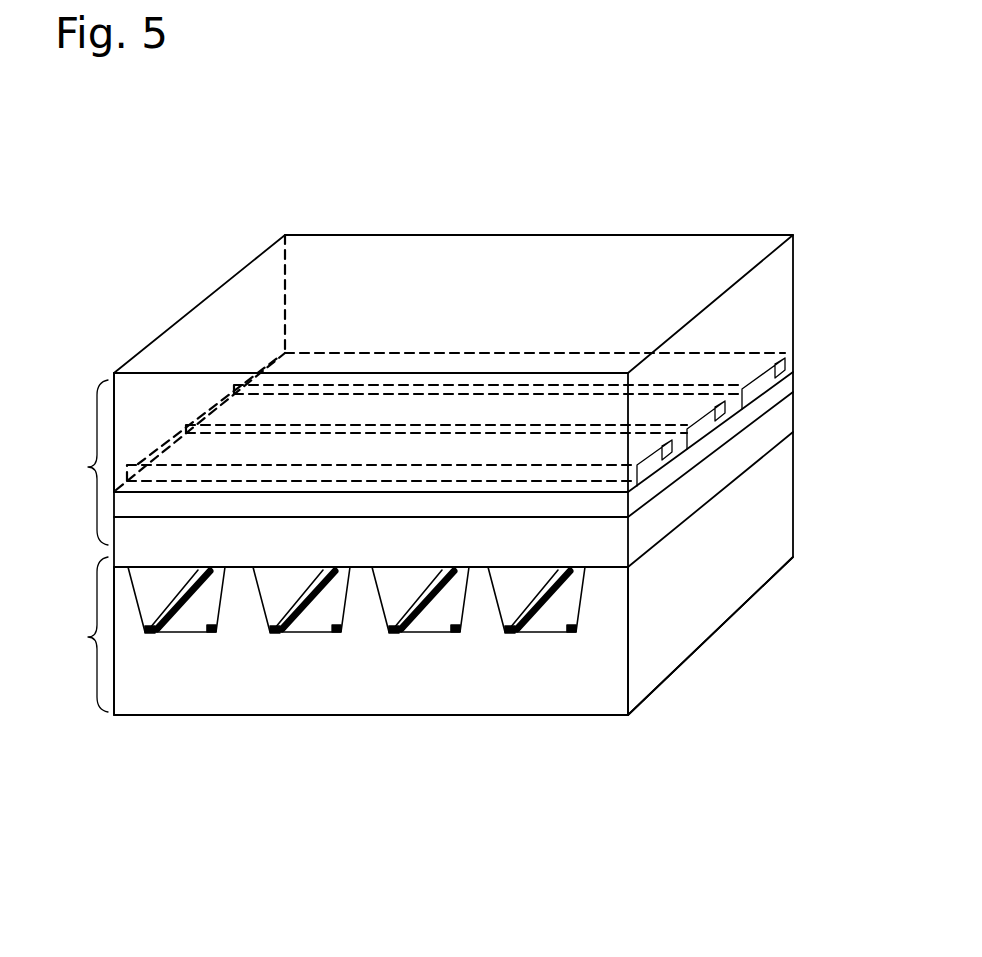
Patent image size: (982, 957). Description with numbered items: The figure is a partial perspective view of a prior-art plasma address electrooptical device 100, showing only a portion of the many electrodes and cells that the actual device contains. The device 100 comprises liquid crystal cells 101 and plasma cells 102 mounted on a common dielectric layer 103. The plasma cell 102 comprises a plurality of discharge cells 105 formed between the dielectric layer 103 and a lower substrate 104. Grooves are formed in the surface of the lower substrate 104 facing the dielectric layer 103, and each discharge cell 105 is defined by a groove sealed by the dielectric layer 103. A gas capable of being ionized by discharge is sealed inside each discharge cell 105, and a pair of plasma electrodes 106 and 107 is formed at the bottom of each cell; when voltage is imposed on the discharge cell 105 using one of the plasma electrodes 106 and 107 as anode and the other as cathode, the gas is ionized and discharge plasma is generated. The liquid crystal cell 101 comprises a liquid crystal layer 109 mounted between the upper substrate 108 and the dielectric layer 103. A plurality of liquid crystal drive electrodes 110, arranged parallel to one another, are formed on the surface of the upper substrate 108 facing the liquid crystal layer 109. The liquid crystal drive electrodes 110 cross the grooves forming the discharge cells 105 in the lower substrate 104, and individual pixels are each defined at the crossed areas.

The plasma address electrooptical device 100 is at (678, 186).
The liquid crystal cell 101 is at (88, 467).
The plasma cell 102 is at (88, 637).
The dielectric layer 103 is at (650, 528).
The lower substrate 104 is at (650, 672).
The discharge cell 105 is at (438, 607).
The plasma electrode 106 is at (277, 634).
The plasma electrode 107 is at (335, 634).
The upper substrate 108 is at (237, 320).
The liquid crystal layer 109 is at (650, 488).
The liquid crystal drive electrodes 110 is at (658, 457).